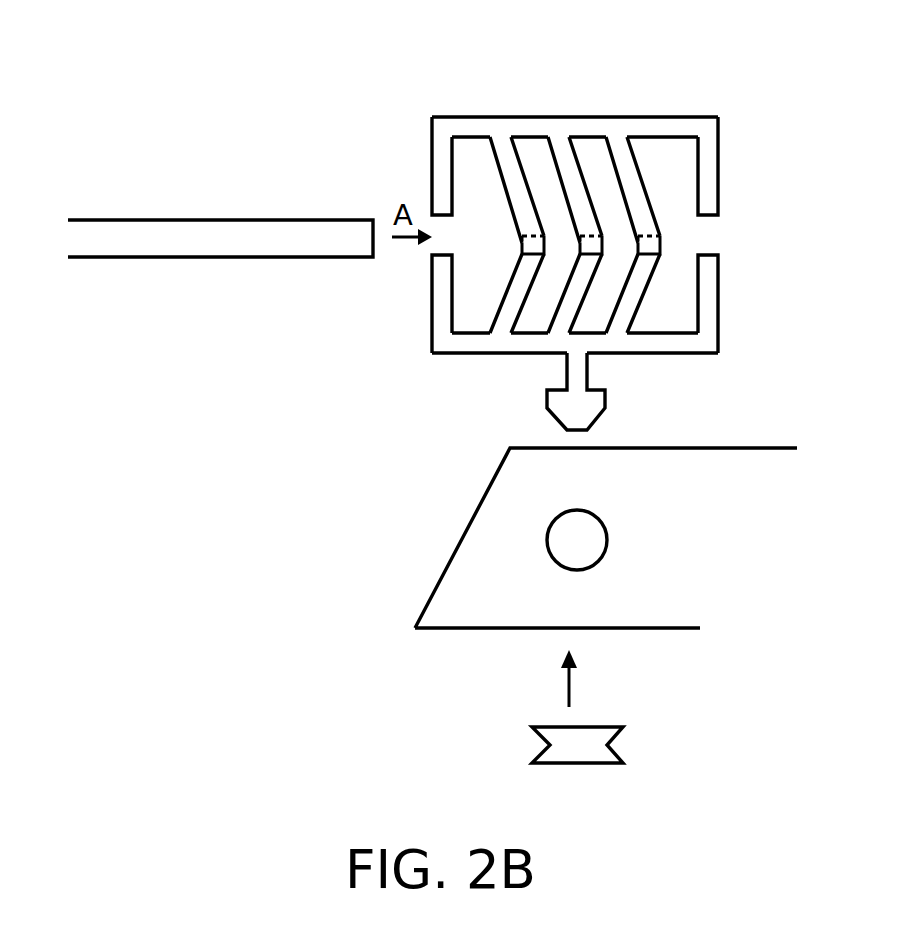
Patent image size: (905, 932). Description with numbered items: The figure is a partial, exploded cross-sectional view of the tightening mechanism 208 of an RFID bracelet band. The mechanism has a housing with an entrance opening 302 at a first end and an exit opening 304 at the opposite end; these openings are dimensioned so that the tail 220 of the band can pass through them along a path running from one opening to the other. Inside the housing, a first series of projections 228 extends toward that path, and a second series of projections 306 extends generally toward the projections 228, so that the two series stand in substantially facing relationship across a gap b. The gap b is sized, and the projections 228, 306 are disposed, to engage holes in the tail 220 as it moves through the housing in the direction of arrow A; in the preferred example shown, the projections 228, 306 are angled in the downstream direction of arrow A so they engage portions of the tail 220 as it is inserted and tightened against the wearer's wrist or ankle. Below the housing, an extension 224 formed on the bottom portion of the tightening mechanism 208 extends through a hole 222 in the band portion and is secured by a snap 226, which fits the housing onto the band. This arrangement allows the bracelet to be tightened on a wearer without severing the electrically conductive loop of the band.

The tightening mechanism 208 is at (465, 109).
The tail 220 is at (238, 240).
The hole 222 is at (597, 538).
The extension 224 is at (597, 405).
The snap 226 is at (597, 750).
The first series of projections 228 is at (618, 143).
The entrance opening 302 is at (438, 248).
The exit opening 304 is at (707, 245).
The second series of projections 306 is at (562, 322).
The gap b is at (657, 243).